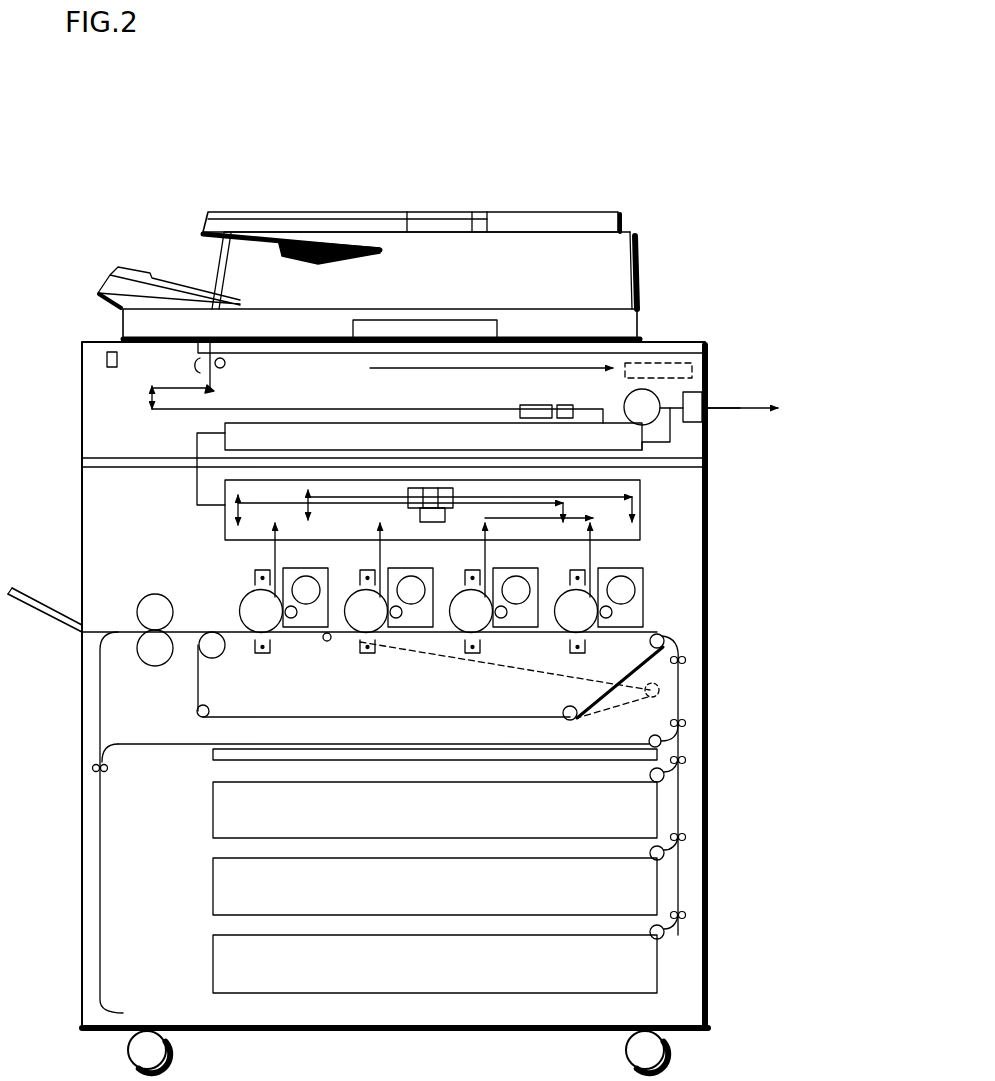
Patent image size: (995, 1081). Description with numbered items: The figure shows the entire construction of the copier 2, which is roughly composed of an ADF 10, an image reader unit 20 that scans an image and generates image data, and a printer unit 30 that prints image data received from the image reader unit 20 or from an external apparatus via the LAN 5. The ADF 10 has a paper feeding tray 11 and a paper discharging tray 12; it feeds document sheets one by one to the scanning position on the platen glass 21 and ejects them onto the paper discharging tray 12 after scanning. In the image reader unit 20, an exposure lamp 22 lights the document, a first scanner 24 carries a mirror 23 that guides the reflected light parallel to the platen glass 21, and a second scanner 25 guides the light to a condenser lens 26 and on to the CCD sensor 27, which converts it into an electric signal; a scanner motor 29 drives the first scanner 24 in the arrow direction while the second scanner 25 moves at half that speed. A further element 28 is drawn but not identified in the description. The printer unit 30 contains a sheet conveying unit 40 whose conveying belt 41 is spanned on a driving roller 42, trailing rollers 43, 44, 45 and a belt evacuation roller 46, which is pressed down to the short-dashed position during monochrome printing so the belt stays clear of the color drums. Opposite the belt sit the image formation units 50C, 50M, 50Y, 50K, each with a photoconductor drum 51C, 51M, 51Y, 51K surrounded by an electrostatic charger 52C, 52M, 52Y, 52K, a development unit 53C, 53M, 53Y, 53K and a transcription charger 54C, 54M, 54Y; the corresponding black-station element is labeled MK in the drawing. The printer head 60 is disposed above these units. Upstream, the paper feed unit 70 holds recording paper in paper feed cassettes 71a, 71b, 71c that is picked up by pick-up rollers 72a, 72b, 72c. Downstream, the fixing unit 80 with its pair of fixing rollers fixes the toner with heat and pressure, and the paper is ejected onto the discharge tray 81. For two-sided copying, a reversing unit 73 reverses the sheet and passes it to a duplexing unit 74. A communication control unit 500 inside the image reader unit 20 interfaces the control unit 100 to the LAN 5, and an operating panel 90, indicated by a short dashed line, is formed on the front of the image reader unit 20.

The copier 2 is at (95, 238).
The LAN 5 is at (748, 412).
The ADF 10 is at (641, 270).
The paper feeding tray 11 is at (285, 212).
The paper discharging tray 12 is at (178, 296).
The image reader unit 20 is at (706, 452).
The platen glass 21 is at (345, 353).
The exposure lamp 22 is at (226, 364).
The mirror 23 is at (214, 390).
The first scanner 24 is at (287, 357).
The second scanner 25 is at (149, 406).
The condenser lens 26 is at (520, 410).
The CCD sensor 27 is at (560, 405).
The sensor 28 is at (112, 368).
The scanner motor 29 is at (625, 402).
The printer unit 30 is at (706, 548).
The sheet conveying unit 40 is at (177, 689).
The conveying belt 41 is at (387, 717).
The driving roller 42 is at (220, 657).
The trailing roller 43 is at (327, 642).
The trailing roller 44 is at (209, 714).
The trailing roller 45 is at (564, 709).
The belt evacuation roller 46 is at (651, 643).
The image formation unit 50K is at (232, 567).
The photoconductor drum 51K is at (256, 605).
The electrostatic charger 52K is at (270, 568).
The development unit 53K is at (307, 580).
The image formation unit 50Y is at (338, 561).
The photoconductor drum 51Y is at (361, 605).
The electrostatic charger 52Y is at (375, 568).
The development unit 53Y is at (412, 580).
The image formation unit 50M is at (434, 559).
The photoconductor drum 51M is at (466, 605).
The electrostatic charger 52M is at (480, 568).
The development unit 53M is at (517, 580).
The image formation unit 50C is at (545, 561).
The photoconductor drum 51C is at (571, 605).
The electrostatic charger 52C is at (585, 568).
The development unit 53C is at (633, 582).
The primary transfer roller (black) MK is at (265, 655).
The transcription charger 54Y is at (366, 655).
The transcription charger 54M is at (470, 655).
The transcription charger 54C is at (577, 655).
The printer head 60 is at (225, 527).
The paper feed unit 70 is at (181, 858).
The paper feed cassette 71a is at (213, 808).
The paper feed cassette 71b is at (213, 885).
The paper feed cassette 71c is at (213, 963).
The pick-up roller 72a is at (650, 778).
The pick-up roller 72b is at (650, 856).
The pick-up roller 72c is at (650, 935).
The reversing unit 73 is at (155, 780).
The duplexing unit 74 is at (330, 747).
The fixing unit 80 is at (153, 591).
The discharge tray 81 is at (55, 610).
The operating panel 90 is at (692, 370).
The control unit 100 is at (396, 423).
The communication control unit 500 is at (708, 392).